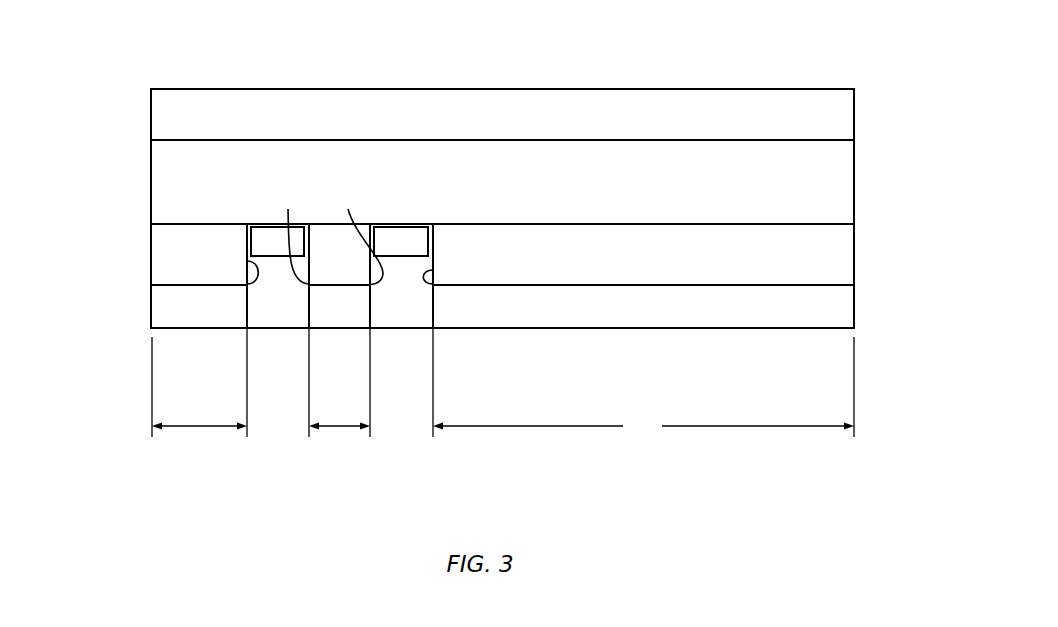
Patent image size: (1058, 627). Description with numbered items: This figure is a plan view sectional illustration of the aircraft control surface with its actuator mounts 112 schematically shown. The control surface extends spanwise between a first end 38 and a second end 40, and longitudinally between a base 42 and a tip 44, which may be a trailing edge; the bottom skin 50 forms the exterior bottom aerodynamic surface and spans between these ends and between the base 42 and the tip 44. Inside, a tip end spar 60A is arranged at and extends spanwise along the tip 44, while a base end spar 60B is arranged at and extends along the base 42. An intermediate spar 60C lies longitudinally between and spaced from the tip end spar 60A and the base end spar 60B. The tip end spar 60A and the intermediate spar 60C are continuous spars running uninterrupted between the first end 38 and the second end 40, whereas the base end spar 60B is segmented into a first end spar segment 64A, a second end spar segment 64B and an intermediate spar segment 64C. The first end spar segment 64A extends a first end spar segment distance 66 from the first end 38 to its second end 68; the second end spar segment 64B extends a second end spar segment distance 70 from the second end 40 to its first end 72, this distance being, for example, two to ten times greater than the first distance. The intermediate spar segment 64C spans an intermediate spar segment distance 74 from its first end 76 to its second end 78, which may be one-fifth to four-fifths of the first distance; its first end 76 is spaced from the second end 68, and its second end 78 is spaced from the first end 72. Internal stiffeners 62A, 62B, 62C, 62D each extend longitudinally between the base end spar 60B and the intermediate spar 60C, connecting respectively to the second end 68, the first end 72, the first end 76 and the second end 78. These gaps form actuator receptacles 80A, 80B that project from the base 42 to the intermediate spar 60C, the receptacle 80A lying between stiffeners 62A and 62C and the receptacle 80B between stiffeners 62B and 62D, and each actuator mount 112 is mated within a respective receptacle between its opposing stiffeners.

The first end 38 is at (151, 172).
The second end 40 is at (854, 173).
The base 42 is at (782, 328).
The tip 44 is at (804, 89).
The bottom skin 50 is at (832, 258).
The tip end spar 60A is at (141, 142).
The base end spar 60B is at (141, 286).
The intermediate spar 60C is at (141, 225).
The internal stiffener 62A is at (247, 214).
The internal stiffener 62B is at (433, 214).
The internal stiffener 62C is at (309, 214).
The internal stiffener 62D is at (370, 214).
The first end spar segment 64A is at (200, 286).
The second end spar segment 64B is at (557, 287).
The intermediate spar segment 64C is at (340, 286).
The first end spar segment distance 66 is at (198, 428).
The second end of the first end spar segment 68 is at (247, 261).
The second end spar segment distance 70 is at (643, 388).
The first end of the second end spar segment 72 is at (433, 270).
The intermediate spar segment distance 74 is at (338, 428).
The first end of the intermediate spar segment 76 is at (291, 234).
The second end of the intermediate spar segment 78 is at (358, 234).
The actuator receptacle 80A is at (278, 288).
The actuator receptacle 80B is at (402, 288).
The actuator mount 112 is at (243, 240).